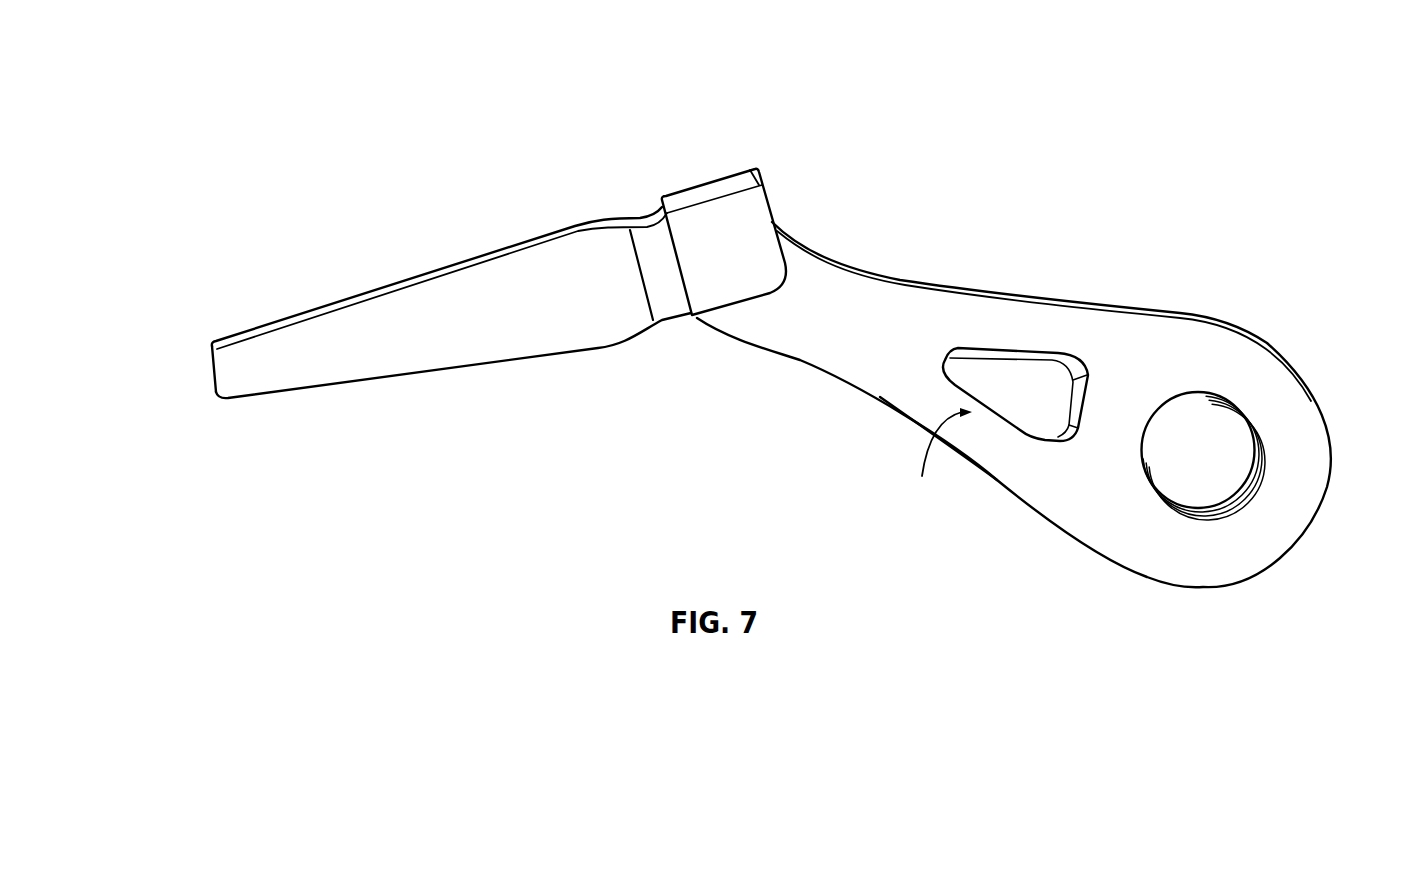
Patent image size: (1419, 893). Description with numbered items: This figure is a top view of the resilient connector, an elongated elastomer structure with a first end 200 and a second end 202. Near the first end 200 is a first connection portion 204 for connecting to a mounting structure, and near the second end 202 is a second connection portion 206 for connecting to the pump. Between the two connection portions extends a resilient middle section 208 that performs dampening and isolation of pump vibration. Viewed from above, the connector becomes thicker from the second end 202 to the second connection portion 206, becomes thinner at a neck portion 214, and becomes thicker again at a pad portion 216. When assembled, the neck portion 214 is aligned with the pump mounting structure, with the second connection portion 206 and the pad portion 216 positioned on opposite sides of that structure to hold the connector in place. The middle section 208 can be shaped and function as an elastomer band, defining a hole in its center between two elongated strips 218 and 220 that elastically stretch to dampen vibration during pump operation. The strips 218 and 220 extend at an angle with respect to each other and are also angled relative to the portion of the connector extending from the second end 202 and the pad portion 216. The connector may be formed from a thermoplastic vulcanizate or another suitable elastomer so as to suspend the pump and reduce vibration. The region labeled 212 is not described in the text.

The first end 200 is at (527, 82).
The second end 202 is at (240, 365).
The first connection portion 204 is at (1218, 503).
The second connection portion 206 is at (552, 238).
The resilient middle section 208 is at (934, 459).
The handle portion 212 is at (378, 325).
The neck portion 214 is at (649, 242).
The pad portion 216 is at (730, 212).
The elongated strip 218 is at (1030, 332).
The elongated strip 220 is at (1018, 470).